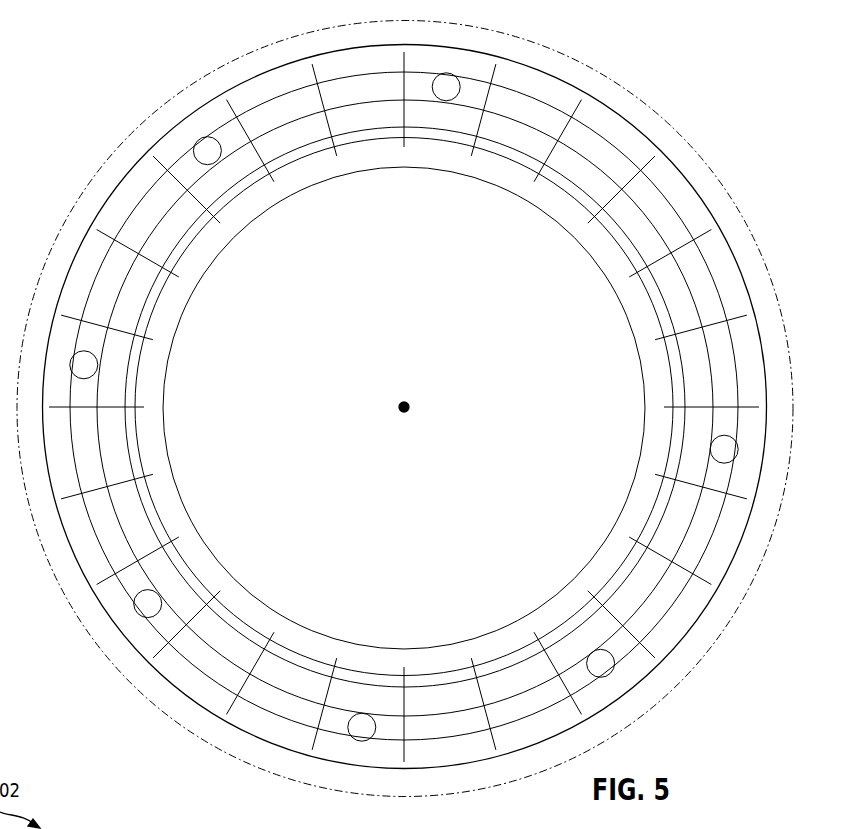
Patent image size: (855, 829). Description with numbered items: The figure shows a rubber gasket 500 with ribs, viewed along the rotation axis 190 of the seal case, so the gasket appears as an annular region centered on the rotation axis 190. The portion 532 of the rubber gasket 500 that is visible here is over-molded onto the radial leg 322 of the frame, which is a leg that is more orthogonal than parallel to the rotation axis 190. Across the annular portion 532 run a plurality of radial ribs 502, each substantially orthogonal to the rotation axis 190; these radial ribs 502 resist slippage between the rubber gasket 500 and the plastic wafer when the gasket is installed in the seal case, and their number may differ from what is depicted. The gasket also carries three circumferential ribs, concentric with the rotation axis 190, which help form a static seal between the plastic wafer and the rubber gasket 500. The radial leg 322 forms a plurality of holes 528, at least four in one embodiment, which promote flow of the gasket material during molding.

The rubber gasket 500 is at (118, 60).
The portion of rubber gasket 532 is at (232, 82).
The radial leg 322 is at (660, 110).
The holes 528 is at (683, 222).
The radial ribs 502 is at (167, 273).
The rotation axis 190 is at (408, 402).